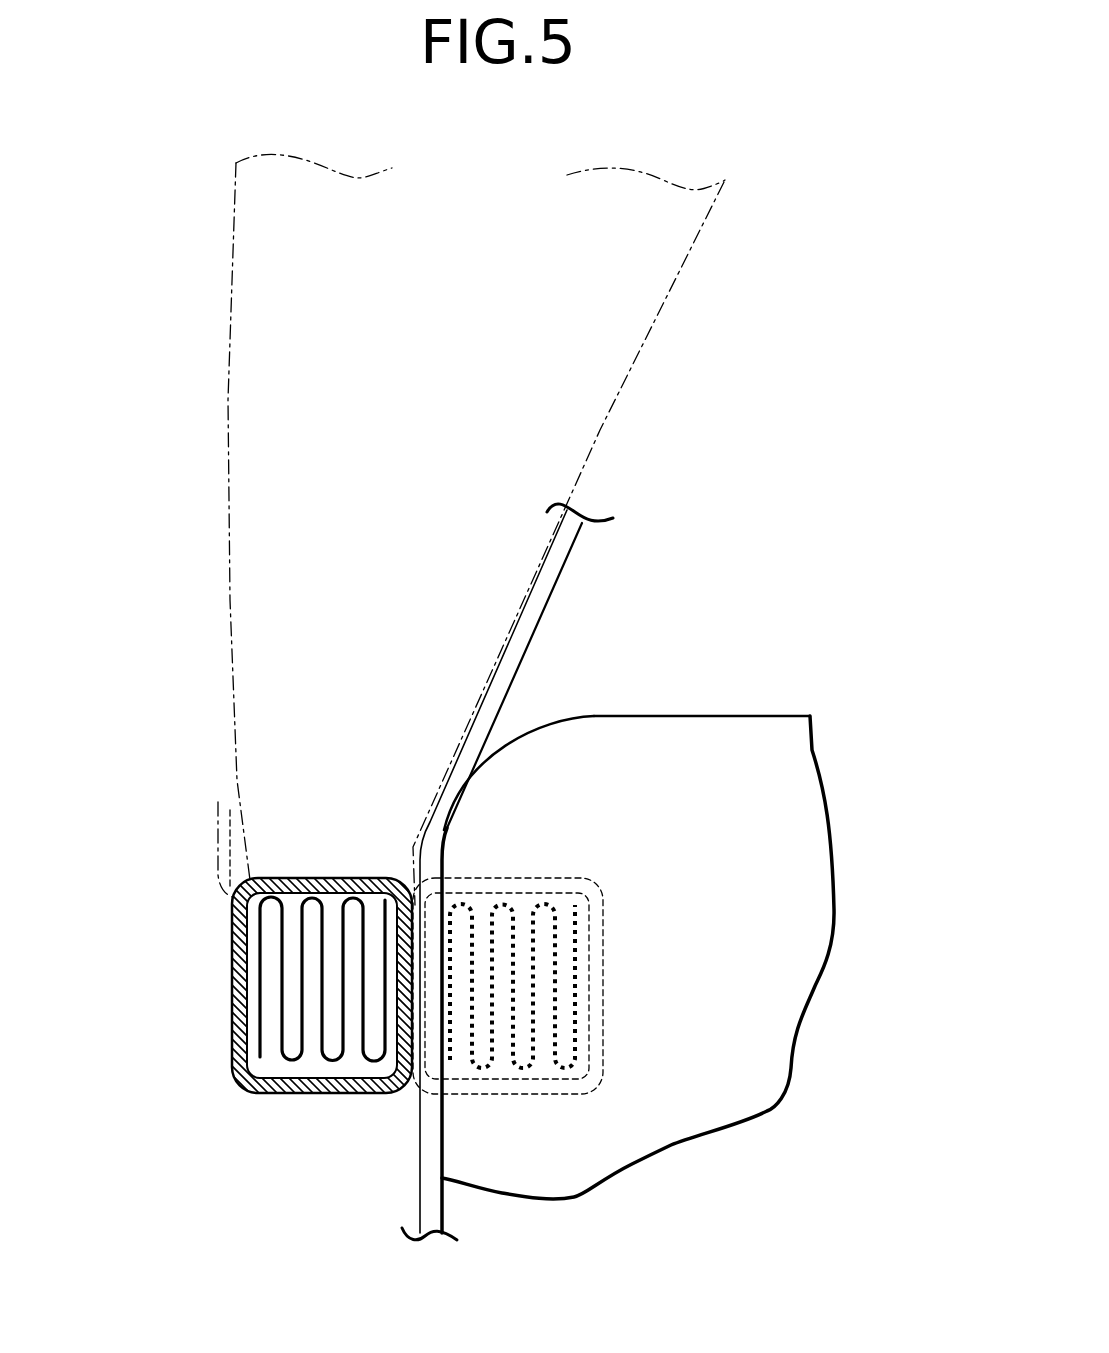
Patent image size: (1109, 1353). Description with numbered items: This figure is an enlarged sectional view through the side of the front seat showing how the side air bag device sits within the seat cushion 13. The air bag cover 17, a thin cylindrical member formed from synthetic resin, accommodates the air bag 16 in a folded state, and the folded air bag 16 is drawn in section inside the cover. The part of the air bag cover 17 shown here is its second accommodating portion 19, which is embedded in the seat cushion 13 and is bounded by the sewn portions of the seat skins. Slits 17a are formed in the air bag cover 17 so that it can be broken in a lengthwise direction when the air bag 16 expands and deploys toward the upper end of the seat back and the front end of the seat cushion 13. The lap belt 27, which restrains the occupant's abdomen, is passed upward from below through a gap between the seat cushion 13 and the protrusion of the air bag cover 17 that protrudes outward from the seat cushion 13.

The seat cushion 13 is at (719, 735).
The air bag 16 is at (667, 308).
The air bag cover 17 is at (317, 1003).
The slits 17a is at (323, 880).
The second accommodating portion 19 is at (322, 1100).
The lap belt 27 is at (537, 593).